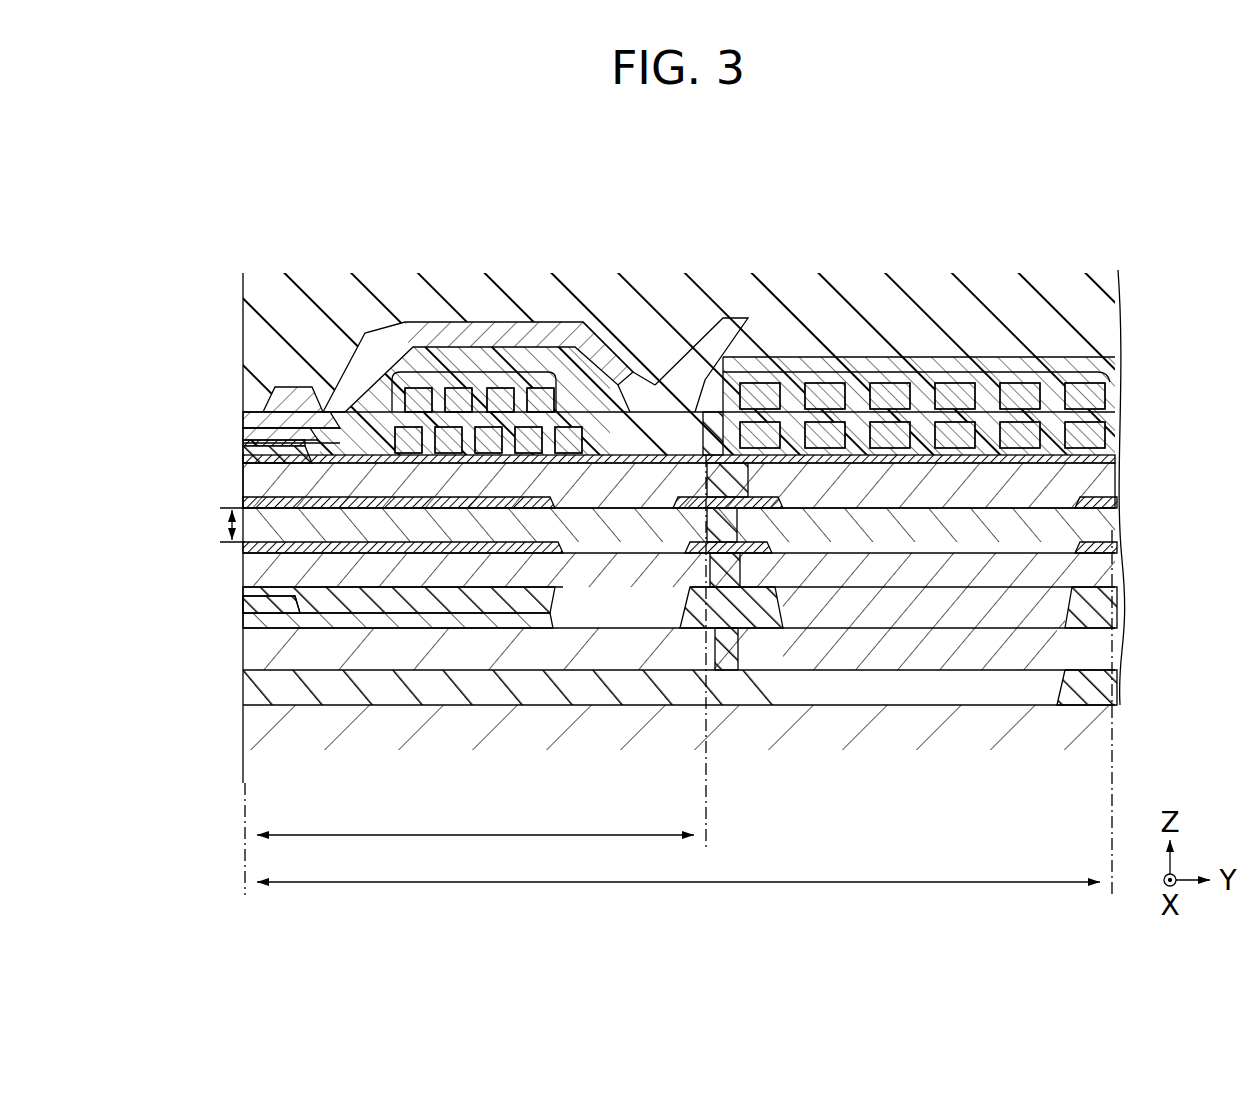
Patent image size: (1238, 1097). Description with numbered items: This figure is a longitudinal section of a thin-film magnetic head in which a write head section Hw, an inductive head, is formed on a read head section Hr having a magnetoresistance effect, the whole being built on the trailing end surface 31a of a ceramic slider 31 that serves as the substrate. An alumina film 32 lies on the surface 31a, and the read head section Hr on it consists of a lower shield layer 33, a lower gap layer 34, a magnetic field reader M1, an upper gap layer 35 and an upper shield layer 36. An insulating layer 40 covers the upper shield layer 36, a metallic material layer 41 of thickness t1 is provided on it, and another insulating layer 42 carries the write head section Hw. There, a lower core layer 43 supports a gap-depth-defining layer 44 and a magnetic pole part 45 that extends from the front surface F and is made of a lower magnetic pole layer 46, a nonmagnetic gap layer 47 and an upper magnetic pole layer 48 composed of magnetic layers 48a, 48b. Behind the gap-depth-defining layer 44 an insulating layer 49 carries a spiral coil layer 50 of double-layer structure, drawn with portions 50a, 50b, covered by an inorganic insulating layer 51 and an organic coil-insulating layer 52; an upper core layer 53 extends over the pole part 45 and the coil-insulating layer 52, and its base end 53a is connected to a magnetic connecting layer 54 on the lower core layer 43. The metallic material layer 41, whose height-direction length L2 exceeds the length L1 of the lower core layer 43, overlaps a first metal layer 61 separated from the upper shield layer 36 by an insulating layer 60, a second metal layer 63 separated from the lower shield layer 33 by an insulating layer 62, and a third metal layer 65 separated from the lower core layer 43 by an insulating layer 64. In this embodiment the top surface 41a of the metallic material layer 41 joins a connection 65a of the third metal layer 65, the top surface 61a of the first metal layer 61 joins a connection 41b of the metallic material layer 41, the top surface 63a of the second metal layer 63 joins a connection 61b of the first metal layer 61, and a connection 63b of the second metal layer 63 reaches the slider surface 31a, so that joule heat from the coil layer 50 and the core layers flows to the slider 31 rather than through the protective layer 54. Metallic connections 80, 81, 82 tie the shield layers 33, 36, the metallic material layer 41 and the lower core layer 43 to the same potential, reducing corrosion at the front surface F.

The slider 31 is at (252, 730).
The trailing end surface of slider 31a is at (1117, 700).
The Al2O3 film 32 is at (252, 705).
The lower shield layer 33 is at (252, 688).
The lower gap layer 34 is at (252, 650).
The upper gap layer 35 is at (252, 606).
The upper shield layer 36 is at (252, 600).
The insulating layer 40 is at (252, 570).
The metallic material layer 41 is at (252, 548).
The top surface of metallic material layer 41a is at (960, 520).
The connection of metallic material layer 41b is at (925, 560).
The insulating layer 42 is at (252, 502).
The lower core layer 43 is at (252, 478).
The gap-depth-defining layer 44 is at (330, 405).
The magnetic pole part 45 is at (590, 414).
The lower magnetic pole layer 46 is at (250, 456).
The nonmagnetic gap layer 47 is at (250, 442).
The upper magnetic pole layer 48 is at (227, 393).
The magnetic layer 48a is at (258, 420).
The magnetic layer 48b is at (275, 398).
The insulating layer 49 is at (600, 395).
The coil layer 50 is at (750, 291).
The first coil portion 50a is at (495, 395).
The second coil portion 50b is at (900, 385).
The inorganic insulating layer 51 is at (565, 385).
The organic coil-insulating layer 52 is at (488, 332).
The upper core layer 53 is at (415, 330).
The base end of upper core layer 53a is at (640, 362).
The magnetic connecting layer 54 is at (243, 283).
The insulating layer 60 is at (750, 600).
The first metal layer 61 is at (900, 565).
The top surface of first metal layer 61a is at (800, 610).
The connection of first metal layer 61b is at (835, 640).
The insulating layer 62 is at (727, 480).
The second metal layer 63 is at (900, 690).
The top surface of second metal layer 63a is at (1090, 690).
The connection of second metal layer 63b is at (1065, 690).
The insulating layer 64 is at (730, 650).
The third metal layer 65 is at (1080, 610).
The connection of third metal layer 65a is at (1070, 605).
The metallic connection 80 is at (548, 690).
The metallic connection 81 is at (578, 655).
The metallic connection 82 is at (600, 575).
The front surface F is at (241, 346).
The magnetic field reader M1 is at (252, 615).
The thickness of metallic material layer t1 is at (220, 525).
The write head section Hw is at (1132, 287).
The read head section Hr is at (1132, 552).
The length of lower core layer L1 is at (475, 852).
The length of metallic material layer L2 is at (678, 899).